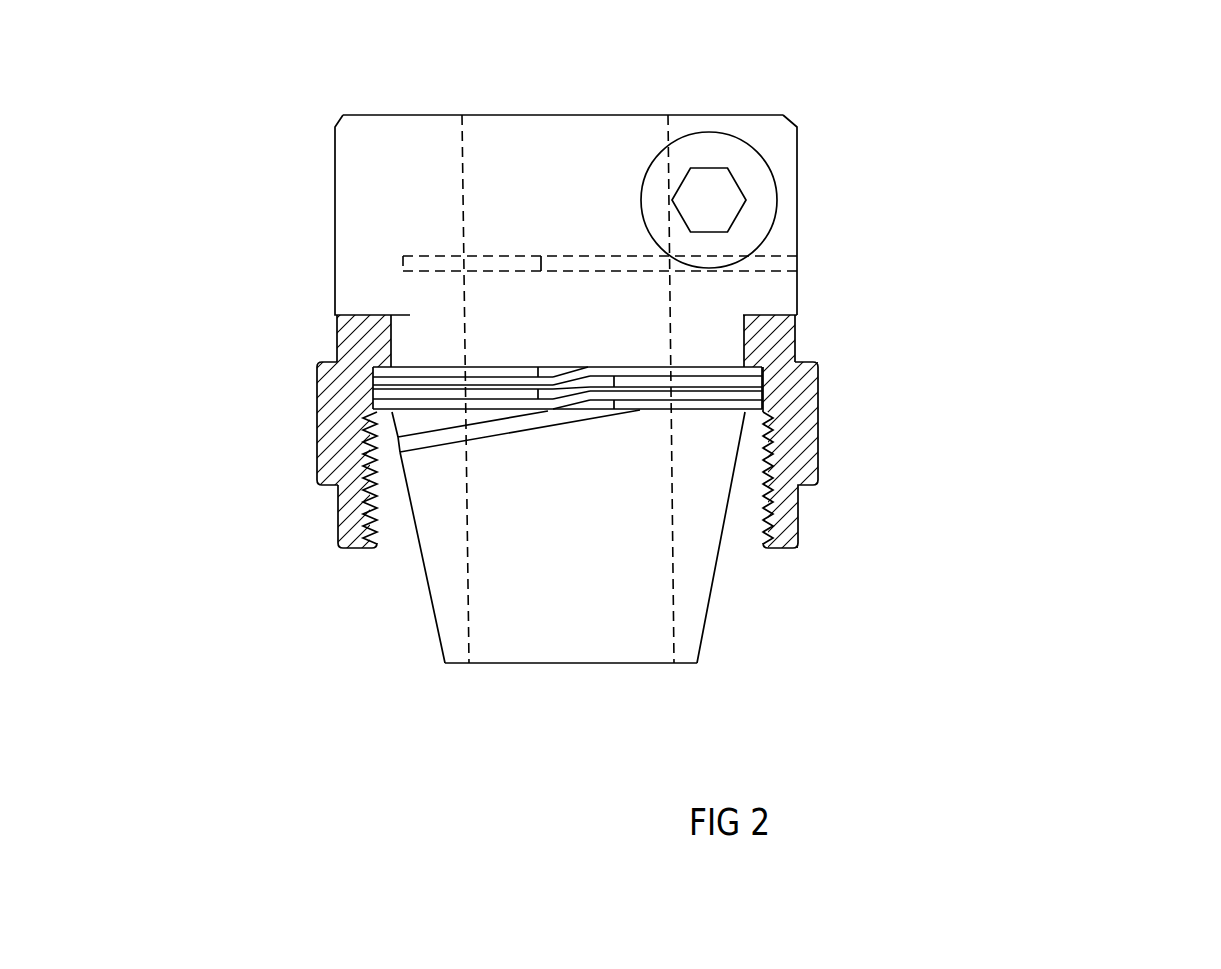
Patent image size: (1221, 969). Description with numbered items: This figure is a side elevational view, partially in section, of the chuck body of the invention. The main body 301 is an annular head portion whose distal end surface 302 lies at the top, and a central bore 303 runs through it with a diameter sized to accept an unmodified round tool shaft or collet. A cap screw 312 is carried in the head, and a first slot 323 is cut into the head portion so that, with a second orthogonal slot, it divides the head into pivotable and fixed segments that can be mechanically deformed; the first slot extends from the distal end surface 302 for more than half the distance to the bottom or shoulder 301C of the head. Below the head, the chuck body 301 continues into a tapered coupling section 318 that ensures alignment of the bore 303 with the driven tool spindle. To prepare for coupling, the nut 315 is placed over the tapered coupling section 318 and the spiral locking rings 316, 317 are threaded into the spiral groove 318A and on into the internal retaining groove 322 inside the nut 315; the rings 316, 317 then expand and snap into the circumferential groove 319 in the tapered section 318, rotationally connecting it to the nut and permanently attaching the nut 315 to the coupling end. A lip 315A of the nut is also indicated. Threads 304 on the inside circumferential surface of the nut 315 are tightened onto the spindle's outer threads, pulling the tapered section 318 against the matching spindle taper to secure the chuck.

The main body 301 is at (375, 170).
The distal end surface 302 is at (493, 113).
The cap screw 312 is at (775, 183).
The first slot 323 is at (797, 263).
The bore 303 is at (657, 664).
The shoulder 301C is at (340, 326).
The internal retaining groove 322 is at (318, 413).
The nut 315 is at (825, 453).
The threads 304 is at (342, 502).
The nut lip 315A is at (763, 368).
The lock ring 316 is at (763, 395).
The lock ring 317 is at (900, 440).
The circumferential groove 319 is at (562, 365).
The spiral groove 318A is at (505, 437).
The tapered coupling section 318 is at (415, 530).